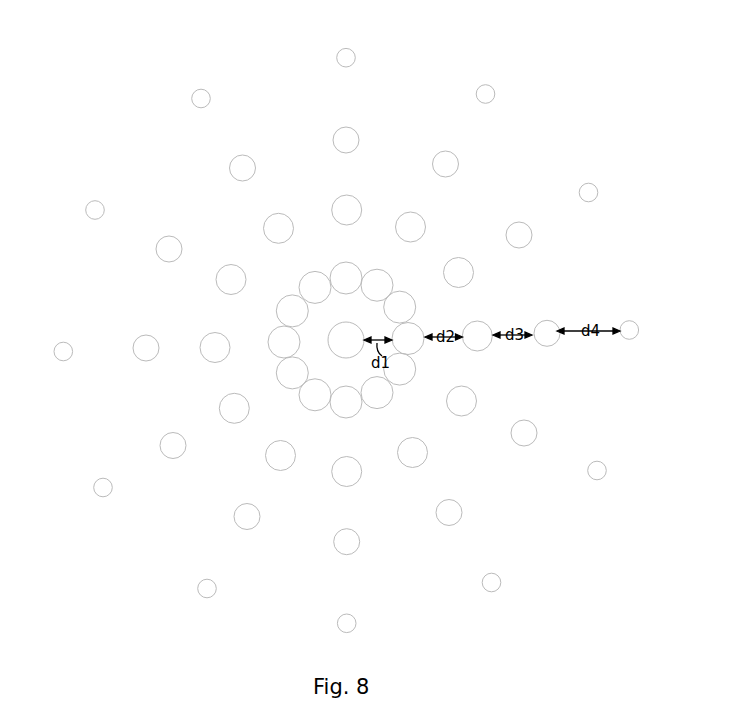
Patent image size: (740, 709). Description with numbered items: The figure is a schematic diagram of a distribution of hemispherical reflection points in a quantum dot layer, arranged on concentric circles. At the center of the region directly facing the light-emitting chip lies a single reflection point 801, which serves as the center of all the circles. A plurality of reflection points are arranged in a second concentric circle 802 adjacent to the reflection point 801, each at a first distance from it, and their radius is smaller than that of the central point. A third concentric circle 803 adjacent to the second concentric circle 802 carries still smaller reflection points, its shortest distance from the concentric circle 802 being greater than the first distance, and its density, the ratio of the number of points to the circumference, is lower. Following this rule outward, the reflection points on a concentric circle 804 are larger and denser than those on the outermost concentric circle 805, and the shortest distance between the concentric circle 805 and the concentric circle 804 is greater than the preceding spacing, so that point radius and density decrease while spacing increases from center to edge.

The reflection point 801 is at (346, 340).
The second concentric circle 802 is at (344, 262).
The third concentric circle 803 is at (342, 195).
The concentric circle 804 is at (346, 127).
The concentric circle 805 is at (344, 48).